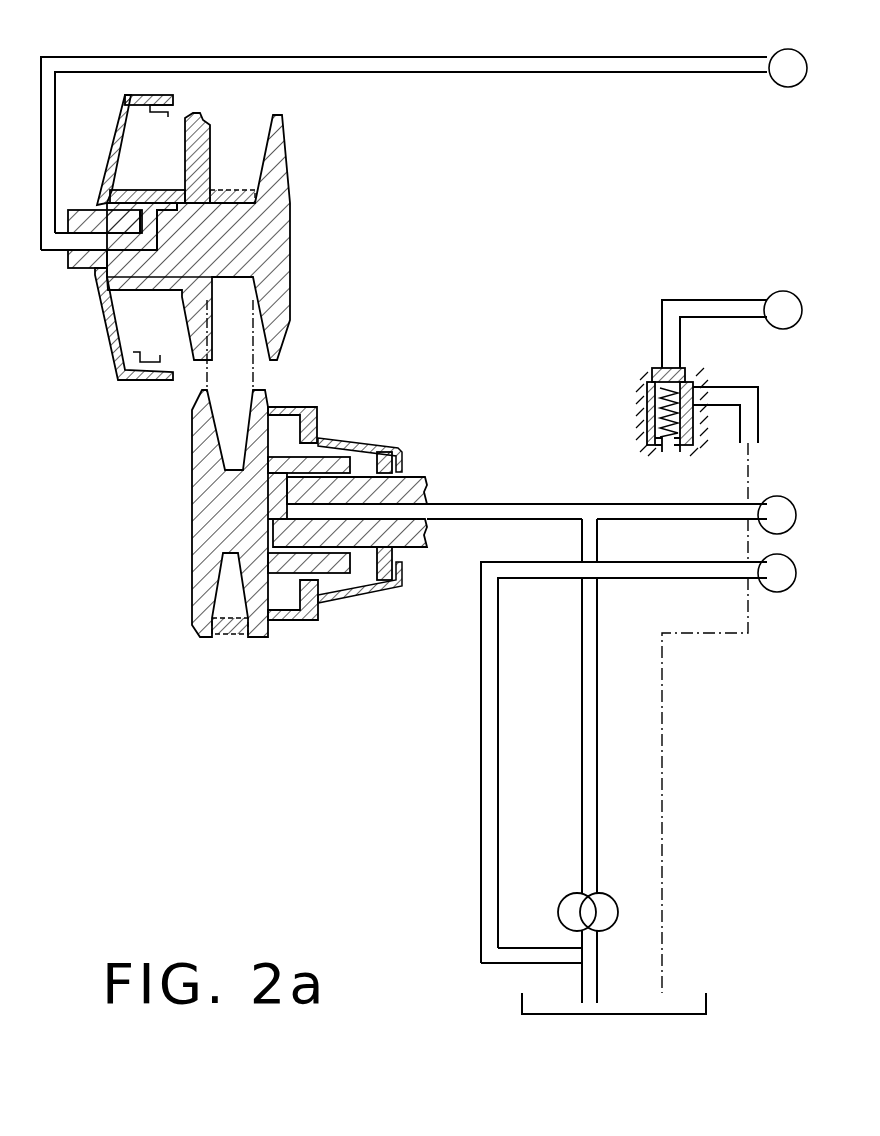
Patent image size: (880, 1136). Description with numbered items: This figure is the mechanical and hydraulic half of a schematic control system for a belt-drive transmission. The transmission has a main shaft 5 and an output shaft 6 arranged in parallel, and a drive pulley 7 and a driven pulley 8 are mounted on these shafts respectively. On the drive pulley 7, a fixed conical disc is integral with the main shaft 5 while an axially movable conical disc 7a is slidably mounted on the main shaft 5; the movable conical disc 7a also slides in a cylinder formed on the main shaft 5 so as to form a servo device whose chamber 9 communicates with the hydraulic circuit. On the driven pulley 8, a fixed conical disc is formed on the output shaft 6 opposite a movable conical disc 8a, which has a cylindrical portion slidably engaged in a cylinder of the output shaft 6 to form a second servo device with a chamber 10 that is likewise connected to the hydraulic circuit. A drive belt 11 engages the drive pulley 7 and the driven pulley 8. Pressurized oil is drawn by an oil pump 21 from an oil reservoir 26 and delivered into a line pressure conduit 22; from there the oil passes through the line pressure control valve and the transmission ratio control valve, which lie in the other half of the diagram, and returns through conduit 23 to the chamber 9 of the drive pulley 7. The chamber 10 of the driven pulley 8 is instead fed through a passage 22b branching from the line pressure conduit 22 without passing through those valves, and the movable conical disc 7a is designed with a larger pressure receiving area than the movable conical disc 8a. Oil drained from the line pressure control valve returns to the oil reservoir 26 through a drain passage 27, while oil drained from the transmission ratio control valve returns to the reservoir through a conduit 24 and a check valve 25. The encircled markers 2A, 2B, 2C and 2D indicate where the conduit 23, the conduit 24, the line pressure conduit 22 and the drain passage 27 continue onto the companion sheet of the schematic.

The main shaft 5 is at (97, 272).
The output shaft 6 is at (418, 478).
The drive pulley 7 is at (298, 147).
The movable conical disc 7a is at (200, 145).
The driven pulley 8 is at (182, 552).
The movable conical disc 8a is at (250, 442).
The chamber 9 is at (158, 166).
The chamber 10 is at (360, 565).
The drive belt 11 is at (236, 636).
The oil pump 21 is at (612, 903).
The line pressure conduit 22 is at (715, 504).
The passage 22b is at (553, 504).
The conduit 23 is at (597, 57).
The conduit 24 is at (717, 300).
The check valve 25 is at (645, 410).
The oil reservoir 26 is at (706, 1002).
The drain passage 27 is at (633, 578).
The connection point 2A is at (788, 68).
The connection point 2B is at (783, 310).
The connection point 2C is at (777, 515).
The connection point 2D is at (777, 573).